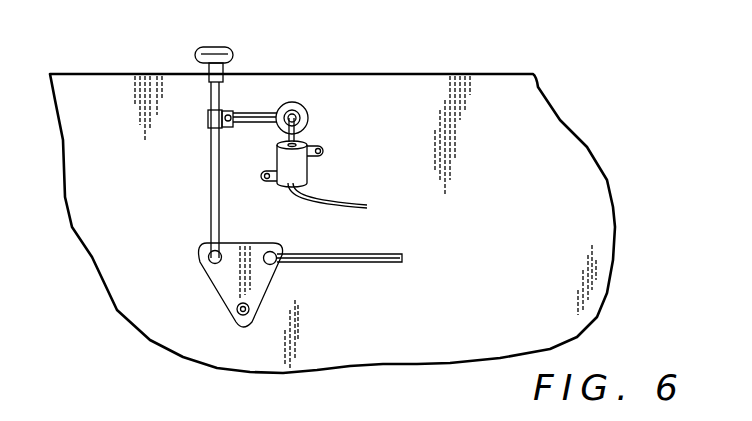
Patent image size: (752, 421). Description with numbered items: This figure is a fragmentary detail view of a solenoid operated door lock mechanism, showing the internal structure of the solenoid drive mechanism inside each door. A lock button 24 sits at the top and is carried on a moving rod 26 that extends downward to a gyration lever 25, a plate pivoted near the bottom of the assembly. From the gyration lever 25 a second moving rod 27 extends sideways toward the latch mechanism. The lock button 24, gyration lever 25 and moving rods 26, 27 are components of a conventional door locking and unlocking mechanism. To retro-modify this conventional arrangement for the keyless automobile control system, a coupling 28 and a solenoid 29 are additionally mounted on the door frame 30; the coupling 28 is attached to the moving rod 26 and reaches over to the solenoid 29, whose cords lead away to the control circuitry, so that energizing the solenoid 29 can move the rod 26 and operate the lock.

The lock button 24 is at (208, 48).
The gyration lever 25 is at (232, 278).
The moving rod 26 is at (210, 173).
The moving rod 27 is at (340, 263).
The coupling 28 is at (256, 110).
The solenoid 29 is at (313, 172).
The door frame 30 is at (105, 87).